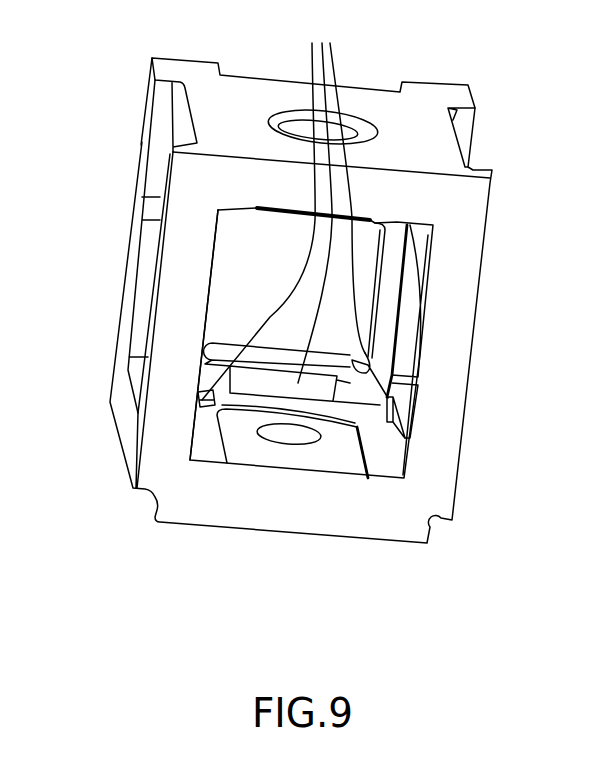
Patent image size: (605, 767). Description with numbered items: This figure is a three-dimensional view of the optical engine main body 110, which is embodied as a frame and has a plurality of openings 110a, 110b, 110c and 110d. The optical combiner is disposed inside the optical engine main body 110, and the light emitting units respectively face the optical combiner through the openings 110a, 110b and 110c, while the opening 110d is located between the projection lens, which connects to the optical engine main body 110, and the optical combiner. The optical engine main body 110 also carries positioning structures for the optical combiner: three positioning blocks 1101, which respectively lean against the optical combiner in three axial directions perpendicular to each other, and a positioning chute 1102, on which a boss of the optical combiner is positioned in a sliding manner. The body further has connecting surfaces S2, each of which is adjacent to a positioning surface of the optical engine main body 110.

The optical engine main body 110 is at (432, 93).
The opening 110a is at (135, 262).
The opening 110b is at (377, 305).
The opening 110c is at (418, 260).
The opening 110d is at (208, 303).
The positioning block 1101 is at (283, 205).
The positioning chute 1102 is at (339, 449).
The connecting surface S2 is at (448, 200).